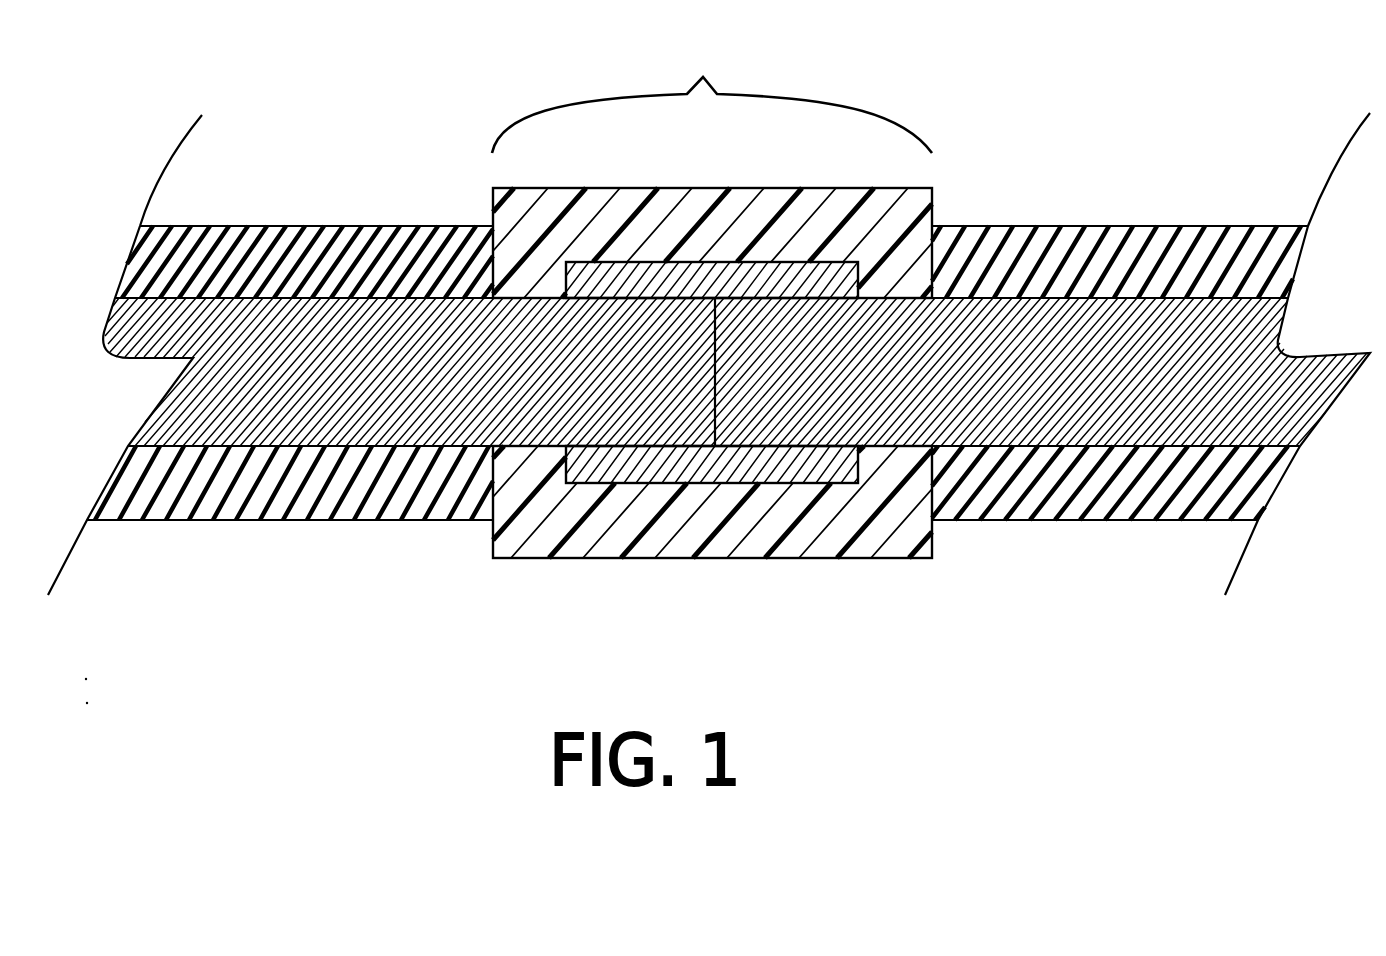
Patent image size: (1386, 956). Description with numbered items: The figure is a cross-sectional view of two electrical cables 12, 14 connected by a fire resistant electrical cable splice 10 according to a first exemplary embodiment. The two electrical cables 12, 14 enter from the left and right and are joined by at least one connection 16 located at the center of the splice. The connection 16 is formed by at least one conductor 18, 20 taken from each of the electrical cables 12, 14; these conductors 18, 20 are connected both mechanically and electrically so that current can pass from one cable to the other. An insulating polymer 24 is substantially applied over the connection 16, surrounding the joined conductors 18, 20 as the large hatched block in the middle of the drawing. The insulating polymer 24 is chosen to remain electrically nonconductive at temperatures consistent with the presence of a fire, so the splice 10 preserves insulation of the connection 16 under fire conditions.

The fire resistant electrical cable splice 10 is at (712, 87).
The electrical cable 12 is at (280, 220).
The electrical cable 14 is at (1080, 221).
The connection 16 is at (833, 490).
The conductor 18 is at (325, 454).
The conductor 20 is at (1080, 452).
The insulating polymer 24 is at (756, 566).